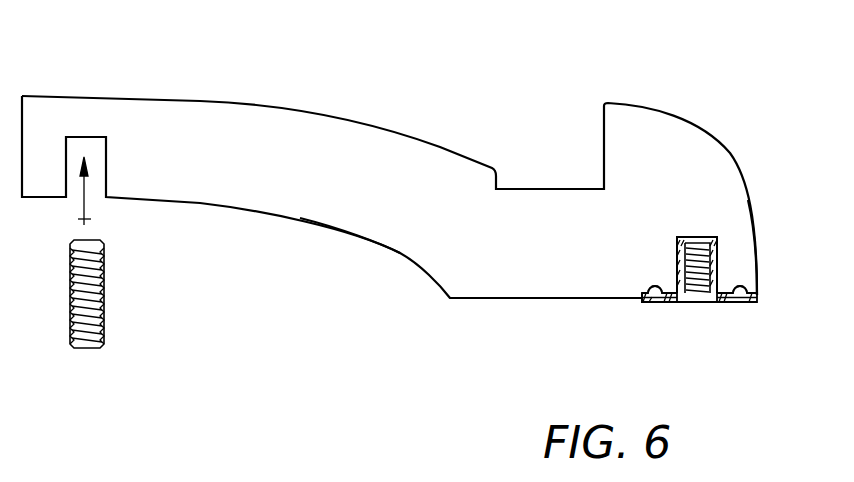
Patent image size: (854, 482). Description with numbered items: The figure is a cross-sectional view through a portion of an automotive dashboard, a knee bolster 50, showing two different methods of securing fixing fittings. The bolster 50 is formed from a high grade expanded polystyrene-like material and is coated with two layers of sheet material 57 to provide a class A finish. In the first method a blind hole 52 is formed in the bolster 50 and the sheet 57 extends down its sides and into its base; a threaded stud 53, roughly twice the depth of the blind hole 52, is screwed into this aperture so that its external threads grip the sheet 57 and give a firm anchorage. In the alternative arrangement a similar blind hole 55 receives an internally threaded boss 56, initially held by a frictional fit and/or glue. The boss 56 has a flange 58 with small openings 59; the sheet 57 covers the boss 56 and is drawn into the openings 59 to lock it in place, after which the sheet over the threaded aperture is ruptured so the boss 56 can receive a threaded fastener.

The bolster 50 is at (298, 132).
The blind hole 52 is at (97, 147).
The threaded stud 53 is at (108, 316).
The blind hole 55 is at (697, 237).
The internally threaded boss 56 is at (707, 302).
The sheet material 57 is at (307, 222).
The flange 58 is at (652, 302).
The openings 59 is at (655, 302).